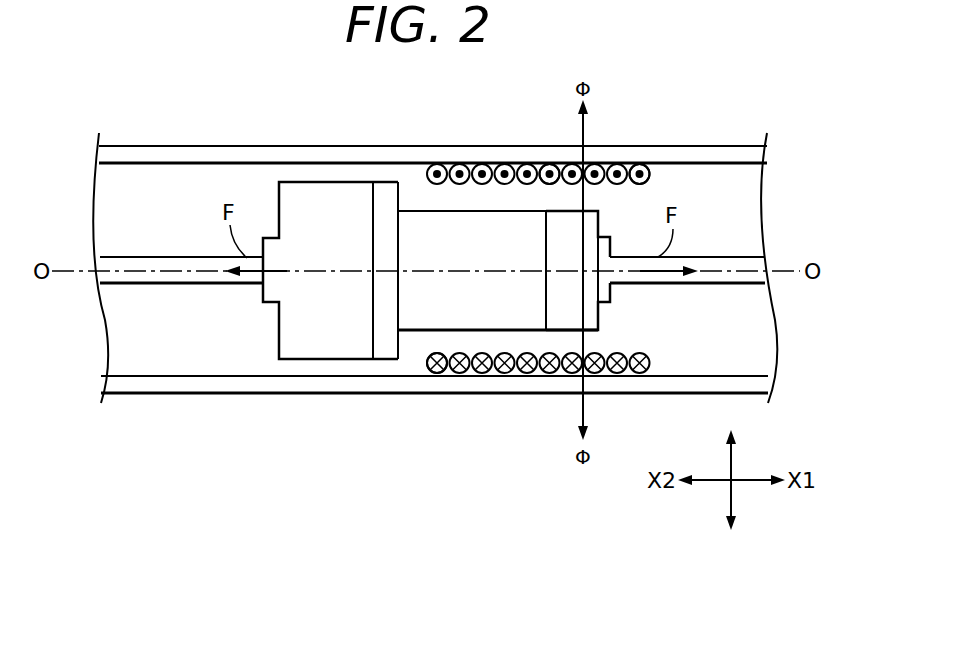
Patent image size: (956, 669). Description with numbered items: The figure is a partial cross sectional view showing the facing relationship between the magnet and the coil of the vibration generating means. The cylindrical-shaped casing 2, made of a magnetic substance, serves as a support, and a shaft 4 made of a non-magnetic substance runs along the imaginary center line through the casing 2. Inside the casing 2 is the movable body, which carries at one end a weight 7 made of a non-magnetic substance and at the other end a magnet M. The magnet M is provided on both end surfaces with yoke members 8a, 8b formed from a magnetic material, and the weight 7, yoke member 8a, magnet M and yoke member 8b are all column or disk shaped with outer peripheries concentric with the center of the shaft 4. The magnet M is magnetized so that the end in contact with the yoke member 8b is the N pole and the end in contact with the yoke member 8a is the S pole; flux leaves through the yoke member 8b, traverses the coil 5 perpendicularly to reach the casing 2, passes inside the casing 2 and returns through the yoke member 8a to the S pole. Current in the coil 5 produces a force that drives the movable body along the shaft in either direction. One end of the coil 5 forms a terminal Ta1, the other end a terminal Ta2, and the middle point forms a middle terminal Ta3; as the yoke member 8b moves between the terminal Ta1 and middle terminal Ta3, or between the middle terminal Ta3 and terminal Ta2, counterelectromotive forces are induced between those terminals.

The casing 2 is at (235, 157).
The shaft 4 is at (720, 277).
The coil 5 is at (592, 161).
The weight 7 is at (292, 345).
The yoke member 8a is at (384, 347).
The yoke member 8b is at (590, 317).
The magnet M is at (421, 230).
The terminal Ta1 is at (428, 363).
The terminal Ta2 is at (643, 167).
The middle terminal Ta3 is at (549, 167).